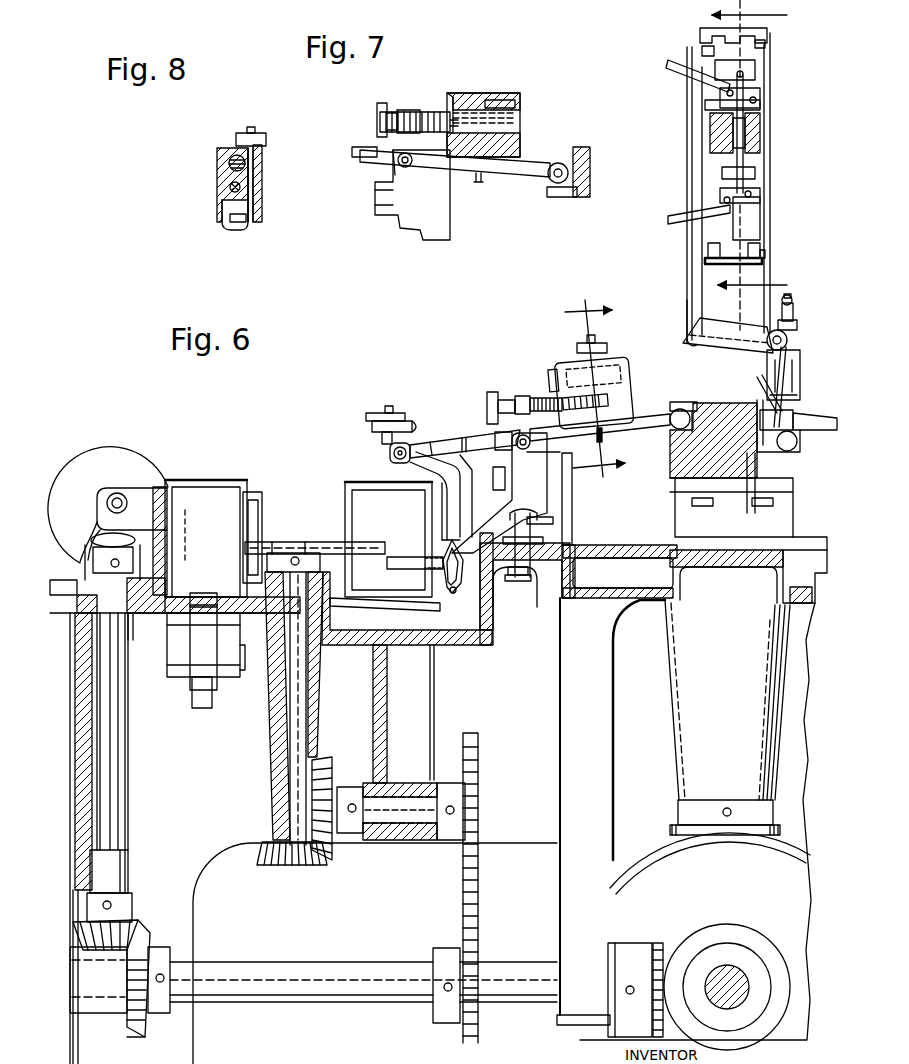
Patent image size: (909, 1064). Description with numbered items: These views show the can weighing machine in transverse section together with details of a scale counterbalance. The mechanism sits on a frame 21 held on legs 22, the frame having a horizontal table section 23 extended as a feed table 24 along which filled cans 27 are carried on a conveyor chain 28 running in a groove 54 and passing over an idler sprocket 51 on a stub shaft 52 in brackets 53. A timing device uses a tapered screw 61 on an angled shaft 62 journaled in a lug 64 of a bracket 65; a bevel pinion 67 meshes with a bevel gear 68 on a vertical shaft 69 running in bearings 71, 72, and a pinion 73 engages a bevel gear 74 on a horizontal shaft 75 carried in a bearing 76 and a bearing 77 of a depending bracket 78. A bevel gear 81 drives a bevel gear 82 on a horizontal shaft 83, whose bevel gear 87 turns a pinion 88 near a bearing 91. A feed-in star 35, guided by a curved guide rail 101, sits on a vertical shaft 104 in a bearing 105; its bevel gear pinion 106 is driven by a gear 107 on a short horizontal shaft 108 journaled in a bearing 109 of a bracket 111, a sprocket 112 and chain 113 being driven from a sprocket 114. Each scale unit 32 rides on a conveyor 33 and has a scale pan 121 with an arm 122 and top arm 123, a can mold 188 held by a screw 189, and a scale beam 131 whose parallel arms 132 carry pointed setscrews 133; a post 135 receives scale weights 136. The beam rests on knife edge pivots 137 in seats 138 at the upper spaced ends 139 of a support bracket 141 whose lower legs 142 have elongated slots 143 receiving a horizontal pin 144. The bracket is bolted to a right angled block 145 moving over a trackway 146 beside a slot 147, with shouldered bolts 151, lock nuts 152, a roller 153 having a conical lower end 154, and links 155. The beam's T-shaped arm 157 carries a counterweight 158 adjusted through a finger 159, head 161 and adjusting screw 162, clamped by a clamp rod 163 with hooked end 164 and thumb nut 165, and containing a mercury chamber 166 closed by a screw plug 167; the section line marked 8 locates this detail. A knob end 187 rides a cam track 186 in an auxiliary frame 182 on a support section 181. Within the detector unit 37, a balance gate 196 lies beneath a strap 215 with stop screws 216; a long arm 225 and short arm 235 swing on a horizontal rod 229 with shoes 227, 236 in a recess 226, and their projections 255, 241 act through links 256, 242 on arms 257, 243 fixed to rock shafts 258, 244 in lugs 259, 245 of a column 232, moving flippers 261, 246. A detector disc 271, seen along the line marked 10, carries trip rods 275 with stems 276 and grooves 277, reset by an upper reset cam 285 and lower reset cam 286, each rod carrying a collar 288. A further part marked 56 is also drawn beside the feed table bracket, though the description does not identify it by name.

In FIG. 6, the section line FIG. 8 is at (610, 381).
In FIG. 6, the section line FIG. 10 is at (768, 165).
In FIG. 6, the frame 21 is at (85, 781).
In FIG. 6, the legs 22 is at (180, 1057).
In FIG. 6, the horizontal table section 23 is at (738, 563).
In FIG. 6, the feed table 24 is at (158, 613).
In FIG. 6, the filled cans 27 is at (225, 478).
In FIG. 6, the conveyor chain 28 is at (212, 592).
In FIG. 6, the scale unit 32 is at (345, 435).
In FIG. 6, the conveyor 33 is at (555, 618).
In FIG. 6, the feed-in star 35 is at (322, 538).
In FIG. 6, the detector unit 37 is at (806, 352).
In FIG. 6, the idler sprocket 51 is at (210, 690).
In FIG. 6, the stub shaft 52 is at (165, 665).
In FIG. 6, the brackets 53 is at (232, 670).
In FIG. 6, the groove 54 is at (195, 580).
In FIG. 6, the bracket 56 is at (262, 502).
In FIG. 6, the tapered screw 61 is at (113, 452).
In FIG. 6, the shaft 62 is at (112, 494).
In FIG. 6, the lug 64 is at (133, 490).
In FIG. 6, the bracket 65 is at (62, 600).
In FIG. 6, the bevel pinion 67 is at (120, 535).
In FIG. 6, the bevel gear 68 is at (90, 525).
In FIG. 6, the vertical shaft 69 is at (128, 760).
In FIG. 6, the bearing 71 is at (133, 642).
In FIG. 6, the bearing 72 is at (109, 886).
In FIG. 6, the pinion 73 is at (138, 918).
In FIG. 6, the bevel gear 74 is at (135, 1040).
In FIG. 6, the horizontal shaft 75 is at (318, 1003).
In FIG. 6, the bearing 76 is at (105, 1013).
In FIG. 6, the bearing 77 is at (686, 821).
In FIG. 6, the depending bracket 78 is at (570, 738).
In FIG. 6, the bevel gear 81 is at (650, 940).
In FIG. 6, the bevel gear 82 is at (708, 935).
In FIG. 6, the horizontal shaft 83 is at (730, 965).
In FIG. 6, the bevel gear 87 is at (652, 852).
In FIG. 6, the pinion 88 is at (672, 800).
In FIG. 6, the bearing 91 is at (727, 700).
In FIG. 6, the curved guide rail 101 is at (180, 478).
In FIG. 6, the vertical shaft 104 is at (298, 720).
In FIG. 6, the bearing 105 is at (318, 700).
In FIG. 6, the bevel gear pinion 106 is at (262, 843).
In FIG. 6, the gear 107 is at (338, 780).
In FIG. 6, the short horizontal shaft 108 is at (398, 800).
In FIG. 6, the bearing 109 is at (398, 838).
In FIG. 6, the bracket 111 is at (388, 712).
In FIG. 6, the sprocket 112 is at (478, 787).
In FIG. 6, the chain 113 is at (480, 902).
In FIG. 6, the sprocket 114 is at (450, 1025).
In FIG. 6, the scale pan 121 is at (375, 612).
In FIG. 6, the arm 122 is at (442, 510).
In FIG. 6, the top arm 123 is at (415, 470).
In FIG. 7, the scale beam 131 is at (360, 145).
In FIG. 6, the scale beam 131 is at (480, 435).
In FIG. 6, the spaced parallel arms 132 is at (445, 422).
In FIG. 6, the pointed setscrew 133 is at (390, 453).
In FIG. 6, the post 135 is at (392, 406).
In FIG. 6, the scale weights 136 is at (415, 420).
In FIG. 7, the knife edge pivots 137 is at (395, 162).
In FIG. 6, the knife edge pivots 137 is at (495, 460).
In FIG. 7, the seats 138 is at (410, 165).
In FIG. 6, the seats 138 is at (525, 450).
In FIG. 6, the upper spaced ends 139 is at (558, 453).
In FIG. 7, the support bracket 141 is at (405, 222).
In FIG. 6, the support bracket 141 is at (499, 493).
In FIG. 6, the lower legs 142 is at (447, 532).
In FIG. 6, the elongated slots 143 is at (444, 566).
In FIG. 6, the horizontal pin 144 is at (445, 612).
In FIG. 6, the right angled block 145 is at (573, 487).
In FIG. 6, the trackway 146 is at (600, 543).
In FIG. 6, the slot 147 is at (575, 572).
In FIG. 6, the shouldered bolts 151 is at (540, 508).
In FIG. 6, the lock nuts 152 is at (554, 521).
In FIG. 6, the roller 153 is at (512, 580).
In FIG. 6, the conical lower end 154 is at (524, 592).
In FIG. 6, the links 155 is at (544, 541).
In FIG. 8, the T-shaped arm 157 is at (244, 226).
In FIG. 7, the T-shaped arm 157 is at (535, 175).
In FIG. 6, the T-shaped arm 157 is at (650, 421).
In FIG. 8, the counterweight 158 is at (216, 172).
In FIG. 7, the counterweight 158 is at (521, 118).
In FIG. 6, the counterweight 158 is at (590, 393).
In FIG. 7, the finger 159 is at (415, 143).
In FIG. 6, the finger 159 is at (519, 392).
In FIG. 7, the head 161 is at (388, 110).
In FIG. 6, the head 161 is at (492, 390).
In FIG. 8, the adjusting screw 162 is at (243, 186).
In FIG. 7, the adjusting screw 162 is at (426, 110).
In FIG. 6, the adjusting screw 162 is at (541, 414).
In FIG. 8, the clamp rod 163 is at (258, 200).
In FIG. 6, the clamp rod 163 is at (596, 337).
In FIG. 8, the hooked end 164 is at (228, 232).
In FIG. 7, the hooked end 164 is at (480, 184).
In FIG. 6, the hooked end 164 is at (602, 440).
In FIG. 8, the thumb nut 165 is at (267, 140).
In FIG. 6, the thumb nut 165 is at (608, 347).
In FIG. 8, the chamber 166 is at (234, 155).
In FIG. 7, the chamber 166 is at (500, 98).
In FIG. 7, the screw plug 167 is at (455, 95).
In FIG. 6, the support section 181 is at (795, 520).
In FIG. 7, the auxiliary frame 182 is at (585, 145).
In FIG. 6, the auxiliary frame 182 is at (688, 480).
In FIG. 7, the cam track 186 is at (565, 199).
In FIG. 6, the cam track 186 is at (696, 405).
In FIG. 7, the knob end 187 is at (558, 162).
In FIG. 6, the knob end 187 is at (678, 408).
In FIG. 6, the can mold 188 is at (386, 562).
In FIG. 6, the screw 189 is at (410, 574).
In FIG. 6, the weighted balance gate 196 is at (760, 380).
In FIG. 6, the strap 215 is at (794, 312).
In FIG. 6, the stop screws 216 is at (793, 300).
In FIG. 6, the long arm 225 is at (801, 387).
In FIG. 6, the recess 226 is at (745, 500).
In FIG. 6, the shoe 227 is at (796, 470).
In FIG. 6, the horizontal rod 229 is at (797, 333).
In FIG. 6, the column 232 is at (705, 165).
In FIG. 6, the short arm 235 is at (790, 375).
In FIG. 6, the shoe 236 is at (795, 413).
In FIG. 6, the projection 241 is at (725, 322).
In FIG. 6, the link 242 is at (705, 265).
In FIG. 6, the arm 243 is at (708, 246).
In FIG. 6, the rock shaft 244 is at (766, 253).
In FIG. 6, the lugs 245 is at (762, 248).
In FIG. 6, the flipper 246 is at (762, 207).
In FIG. 6, the projection 255 is at (703, 342).
In FIG. 6, the link 256 is at (688, 128).
In FIG. 6, the arm 257 is at (699, 32).
In FIG. 6, the rock shaft 258 is at (766, 43).
In FIG. 6, the lugs 259 is at (770, 55).
In FIG. 6, the flipper member 261 is at (756, 72).
In FIG. 6, the detector disc 271 is at (762, 120).
In FIG. 6, the trip rod 275 is at (737, 107).
In FIG. 6, the stems 276 is at (720, 192).
In FIG. 6, the grooves 277 is at (762, 142).
In FIG. 6, the upper reset cam 285 is at (676, 72).
In FIG. 6, the lower reset cam 286 is at (668, 219).
In FIG. 6, the collar 288 is at (756, 173).